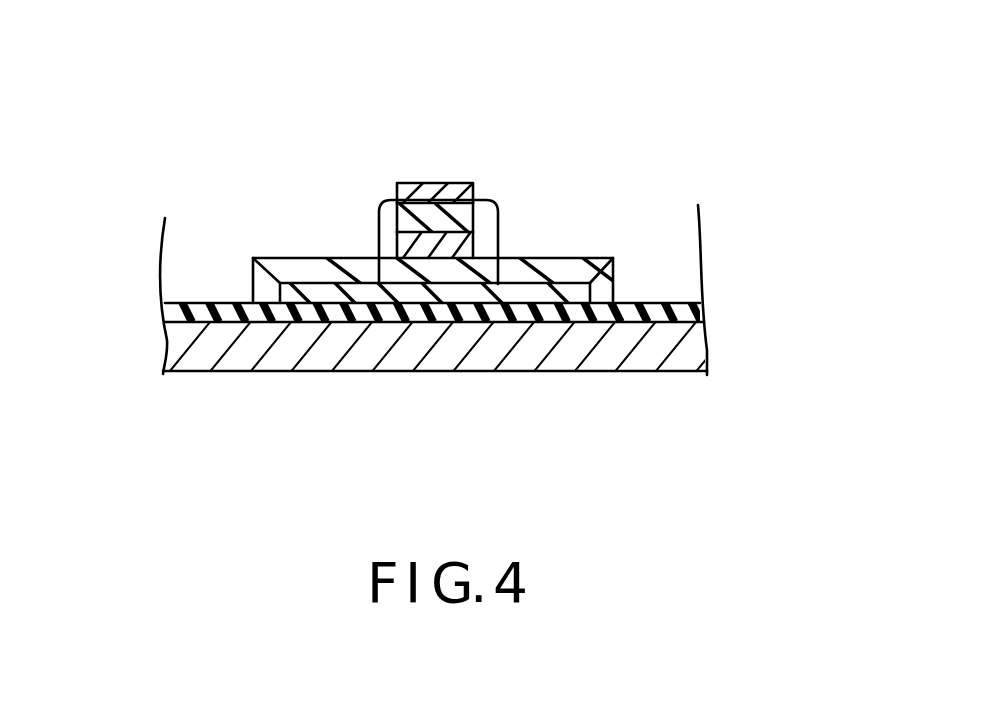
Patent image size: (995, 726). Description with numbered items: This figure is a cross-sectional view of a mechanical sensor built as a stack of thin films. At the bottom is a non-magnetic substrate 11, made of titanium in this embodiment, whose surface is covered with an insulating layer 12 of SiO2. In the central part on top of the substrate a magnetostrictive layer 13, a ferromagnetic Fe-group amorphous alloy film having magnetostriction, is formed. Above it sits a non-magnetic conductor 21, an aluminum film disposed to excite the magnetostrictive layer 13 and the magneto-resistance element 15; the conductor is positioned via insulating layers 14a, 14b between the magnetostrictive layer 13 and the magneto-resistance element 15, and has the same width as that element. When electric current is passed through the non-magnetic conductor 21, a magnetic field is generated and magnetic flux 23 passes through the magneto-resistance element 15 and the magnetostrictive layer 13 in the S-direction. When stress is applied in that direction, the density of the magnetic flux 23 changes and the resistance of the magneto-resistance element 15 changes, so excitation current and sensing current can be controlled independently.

The substrate 11 is at (690, 360).
The insulating layer 12 is at (690, 315).
The magnetostrictive layer 13 is at (570, 290).
The insulating layer 14a is at (287, 267).
The insulating layer 14b is at (397, 213).
The magneto-resistance element 15 is at (435, 183).
The non-magnetic conductor 21 is at (477, 247).
The magnetic flux 23 is at (498, 205).